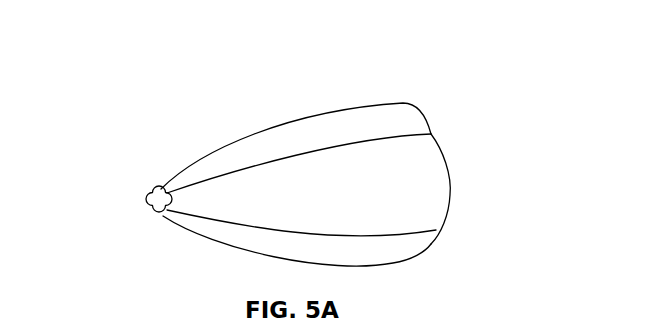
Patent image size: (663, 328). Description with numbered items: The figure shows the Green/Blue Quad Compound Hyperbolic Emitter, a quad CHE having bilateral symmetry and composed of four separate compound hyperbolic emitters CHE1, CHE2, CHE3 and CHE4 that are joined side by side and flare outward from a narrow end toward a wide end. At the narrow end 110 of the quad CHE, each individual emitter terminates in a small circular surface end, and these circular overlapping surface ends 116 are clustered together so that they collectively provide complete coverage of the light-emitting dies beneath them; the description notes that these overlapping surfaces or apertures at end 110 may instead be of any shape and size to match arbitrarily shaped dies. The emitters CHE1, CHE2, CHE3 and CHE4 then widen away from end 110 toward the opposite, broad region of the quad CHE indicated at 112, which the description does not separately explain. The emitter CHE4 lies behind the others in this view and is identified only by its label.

The end of the quad CHE 110 is at (104, 85).
The conical hollow element assembly 112 is at (524, 68).
The circular overlapping surface ends 116 is at (147, 199).
The first compound hyperbolic emitter CHE1 is at (310, 127).
The second compound hyperbolic emitter CHE2 is at (425, 147).
The third compound hyperbolic emitter CHE3 is at (418, 245).
The fourth compound hyperbolic emitter CHE4 is at (150, 207).